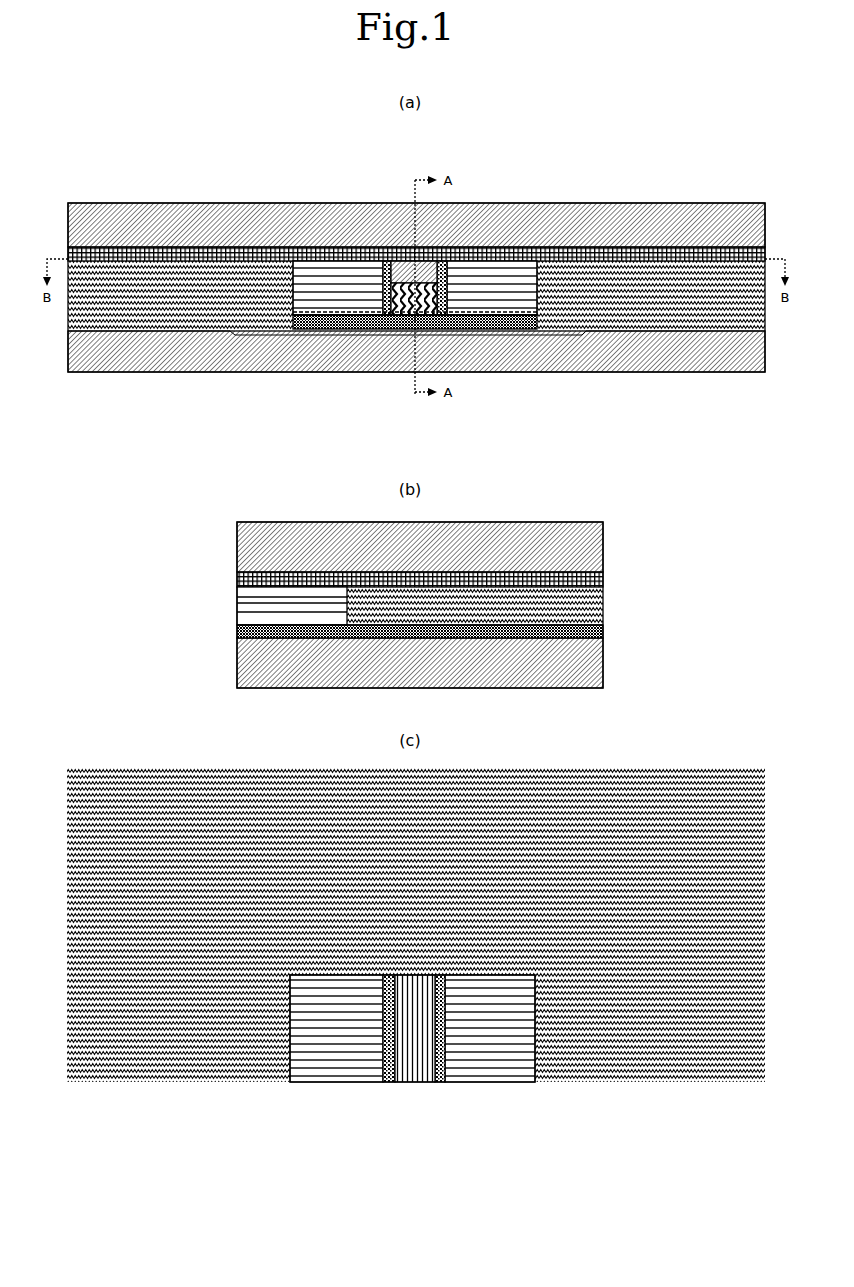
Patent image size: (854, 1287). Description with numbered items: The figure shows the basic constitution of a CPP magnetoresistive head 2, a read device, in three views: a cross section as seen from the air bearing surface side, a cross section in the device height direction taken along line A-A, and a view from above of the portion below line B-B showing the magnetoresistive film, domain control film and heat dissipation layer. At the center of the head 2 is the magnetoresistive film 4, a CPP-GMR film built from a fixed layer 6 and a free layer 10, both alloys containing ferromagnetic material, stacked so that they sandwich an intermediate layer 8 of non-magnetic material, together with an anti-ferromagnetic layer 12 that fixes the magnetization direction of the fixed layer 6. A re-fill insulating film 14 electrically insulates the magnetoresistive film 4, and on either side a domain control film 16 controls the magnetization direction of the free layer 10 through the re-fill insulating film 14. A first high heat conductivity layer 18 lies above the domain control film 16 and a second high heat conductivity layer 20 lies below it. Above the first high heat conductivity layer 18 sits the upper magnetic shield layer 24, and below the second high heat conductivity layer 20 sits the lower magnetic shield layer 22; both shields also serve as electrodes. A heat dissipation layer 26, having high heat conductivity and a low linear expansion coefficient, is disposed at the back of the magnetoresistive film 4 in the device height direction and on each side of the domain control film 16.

The CPP magnetoresistive head 2 is at (207, 182).
The magnetoresistive film 4 is at (470, 262).
The fixed layer 6 is at (378, 318).
The intermediate layer 8 is at (388, 262).
The free layer 10 is at (400, 262).
The anti-ferromagnetic layer 12 is at (410, 322).
The re-fill insulating film 14 is at (330, 330).
The domain control film 16 is at (520, 265).
The first high heat conductivity layer 18 is at (683, 256).
The second high heat conductivity layer 20 is at (533, 324).
The lower magnetic shield layer 22 is at (617, 360).
The upper magnetic shield layer 24 is at (613, 228).
The heat dissipation layer 26 is at (150, 330).